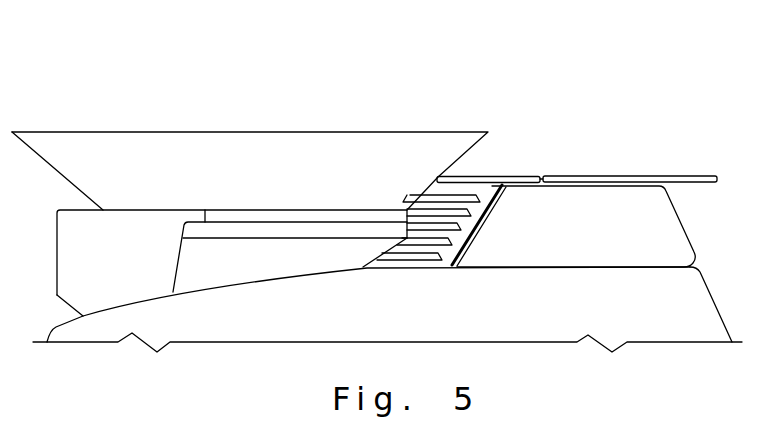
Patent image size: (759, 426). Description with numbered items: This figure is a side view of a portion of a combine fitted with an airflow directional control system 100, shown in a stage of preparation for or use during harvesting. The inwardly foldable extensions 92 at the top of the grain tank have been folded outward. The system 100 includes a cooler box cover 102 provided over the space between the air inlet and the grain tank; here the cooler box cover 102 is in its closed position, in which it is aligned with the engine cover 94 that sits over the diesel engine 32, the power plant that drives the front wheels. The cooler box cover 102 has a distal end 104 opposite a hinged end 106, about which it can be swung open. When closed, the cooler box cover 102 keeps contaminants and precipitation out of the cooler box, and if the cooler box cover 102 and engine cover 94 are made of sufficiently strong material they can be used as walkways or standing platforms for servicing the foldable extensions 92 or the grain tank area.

The airflow directional control system 100 is at (592, 85).
The foldable extensions 92 is at (462, 132).
The distal end 104 is at (440, 176).
The cooler box cover 102 is at (498, 176).
The hinged end 106 is at (543, 176).
The engine cover 94 is at (673, 175).
The diesel engine 32 is at (673, 233).